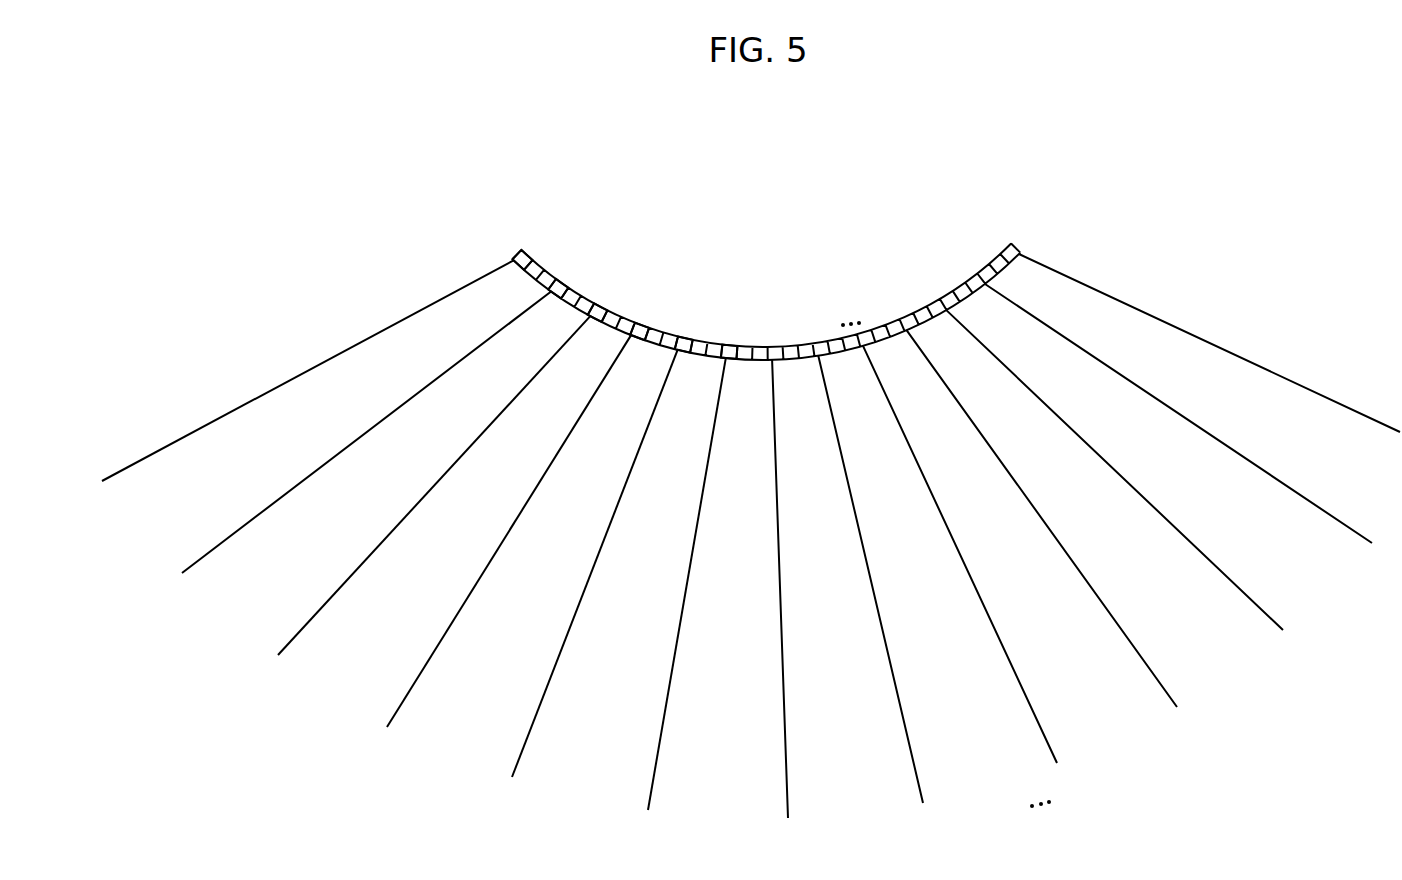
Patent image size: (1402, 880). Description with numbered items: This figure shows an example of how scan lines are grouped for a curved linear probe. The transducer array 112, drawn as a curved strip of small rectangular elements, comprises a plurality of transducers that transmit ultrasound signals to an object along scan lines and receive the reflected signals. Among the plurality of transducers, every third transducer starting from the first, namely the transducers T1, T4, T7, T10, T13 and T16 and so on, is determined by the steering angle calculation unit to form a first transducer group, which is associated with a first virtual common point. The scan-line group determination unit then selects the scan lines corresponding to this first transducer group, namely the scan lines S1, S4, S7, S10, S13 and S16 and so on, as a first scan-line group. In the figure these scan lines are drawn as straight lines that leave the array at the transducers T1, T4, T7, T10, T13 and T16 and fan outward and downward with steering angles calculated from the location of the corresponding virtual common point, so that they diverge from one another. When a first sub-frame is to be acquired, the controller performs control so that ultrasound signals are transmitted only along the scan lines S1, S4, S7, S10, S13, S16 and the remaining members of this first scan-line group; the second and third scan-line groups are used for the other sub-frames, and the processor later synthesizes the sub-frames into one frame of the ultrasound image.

The transducer array 112 is at (1017, 243).
The transducer T1 is at (529, 247).
The transducer T4 is at (562, 274).
The transducer T7 is at (601, 298).
The transducer T10 is at (646, 318).
The transducer T13 is at (685, 330).
The transducer T16 is at (730, 336).
The scan line S1 is at (122, 471).
The scan line S4 is at (212, 557).
The scan line S7 is at (300, 636).
The scan line S10 is at (410, 698).
The scan line S13 is at (528, 748).
The scan line S16 is at (658, 784).